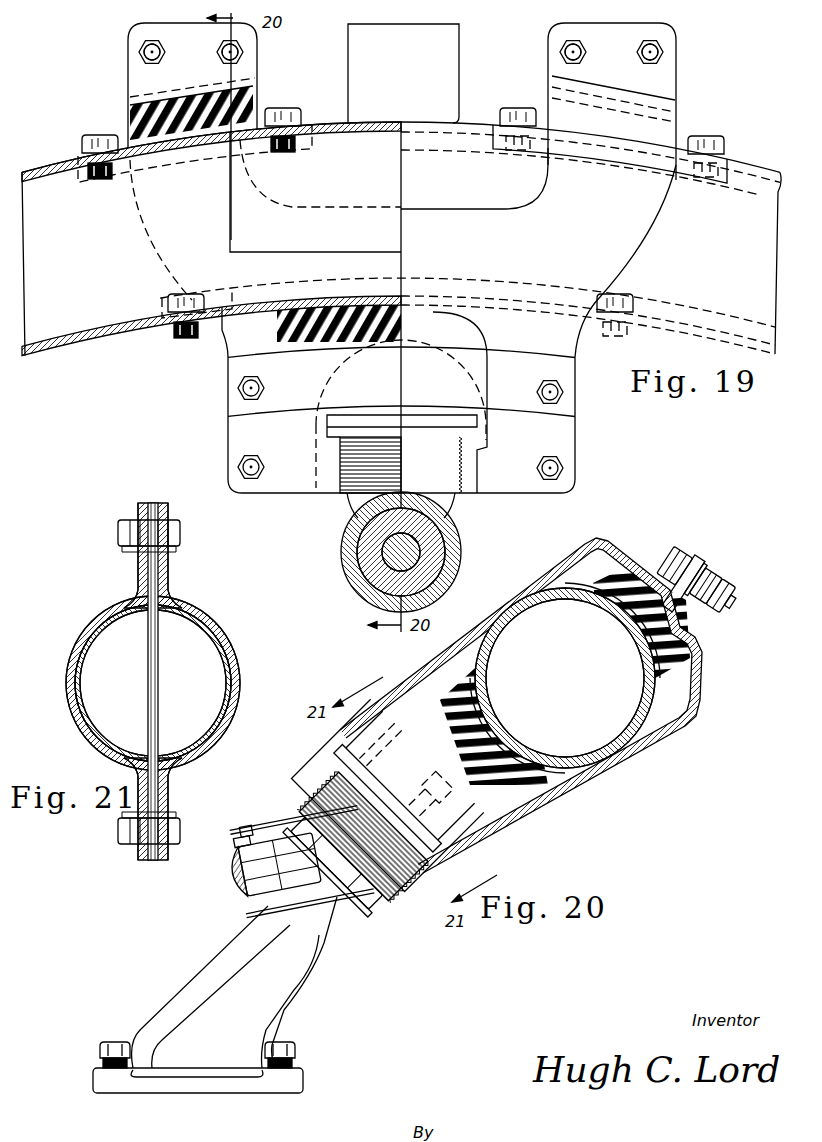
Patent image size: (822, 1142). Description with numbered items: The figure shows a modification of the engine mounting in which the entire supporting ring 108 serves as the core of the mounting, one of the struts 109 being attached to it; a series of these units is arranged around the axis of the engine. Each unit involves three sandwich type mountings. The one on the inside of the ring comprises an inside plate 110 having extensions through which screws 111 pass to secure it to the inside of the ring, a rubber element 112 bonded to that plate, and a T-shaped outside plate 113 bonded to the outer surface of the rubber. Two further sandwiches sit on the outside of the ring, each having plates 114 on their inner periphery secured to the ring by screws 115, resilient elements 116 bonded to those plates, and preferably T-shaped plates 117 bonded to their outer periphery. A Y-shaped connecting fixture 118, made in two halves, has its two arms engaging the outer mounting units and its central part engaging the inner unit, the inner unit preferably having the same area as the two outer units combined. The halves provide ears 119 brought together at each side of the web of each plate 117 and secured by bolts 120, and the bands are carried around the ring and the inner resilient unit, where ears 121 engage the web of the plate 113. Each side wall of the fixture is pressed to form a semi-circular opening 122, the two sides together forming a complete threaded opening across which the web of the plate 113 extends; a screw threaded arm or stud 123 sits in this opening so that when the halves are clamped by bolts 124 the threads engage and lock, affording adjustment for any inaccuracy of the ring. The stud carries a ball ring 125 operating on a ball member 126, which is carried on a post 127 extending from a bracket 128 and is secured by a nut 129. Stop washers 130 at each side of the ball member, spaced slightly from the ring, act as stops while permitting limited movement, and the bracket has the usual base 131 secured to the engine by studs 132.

In FIG. 19, the supporting ring 108 is at (107, 333).
In FIG. 20, the supporting ring 108 is at (640, 727).
In FIG. 19, the strut 109 is at (461, 63).
In FIG. 19, the inside plate 110 is at (247, 313).
In FIG. 20, the inside plate 110 is at (457, 690).
In FIG. 19, the screws 111 is at (172, 332).
In FIG. 19, the rubber element 112 is at (277, 327).
In FIG. 20, the rubber element 112 is at (540, 768).
In FIG. 19, the outside plate 113 is at (238, 417).
In FIG. 21, the outside plate 113 is at (157, 633).
In FIG. 20, the outside plate 113 is at (447, 720).
In FIG. 19, the plates 114 is at (78, 154).
In FIG. 20, the plates 114 is at (648, 656).
In FIG. 19, the screws 115 is at (88, 133).
In FIG. 19, the resilient elements 116 is at (250, 100).
In FIG. 20, the resilient elements 116 is at (694, 672).
In FIG. 19, the plates 117 is at (138, 93).
In FIG. 20, the plates 117 is at (648, 578).
In FIG. 19, the connecting fixture 118 is at (657, 233).
In FIG. 20, the connecting fixture 118 is at (640, 757).
In FIG. 19, the ears 119 is at (258, 47).
In FIG. 20, the ears 119 is at (725, 603).
In FIG. 19, the bolts 120 is at (147, 50).
In FIG. 20, the bolts 120 is at (686, 553).
In FIG. 19, the ears 121 is at (566, 432).
In FIG. 20, the ears 121 is at (320, 813).
In FIG. 19, the semi-circular opening 122 is at (317, 428).
In FIG. 21, the semi-circular opening 122 is at (233, 650).
In FIG. 20, the semi-circular opening 122 is at (433, 710).
In FIG. 19, the screw threaded arm or stud 123 is at (349, 486).
In FIG. 21, the screw threaded arm or stud 123 is at (230, 675).
In FIG. 20, the screw threaded arm or stud 123 is at (378, 908).
In FIG. 19, the bolts 124 is at (565, 395).
In FIG. 21, the bolts 124 is at (117, 527).
In FIG. 20, the bolts 124 is at (361, 882).
In FIG. 20, the ball ring 125 is at (238, 887).
In FIG. 20, the ball member 126 is at (250, 890).
In FIG. 20, the post 127 is at (242, 843).
In FIG. 20, the bracket 128 is at (308, 992).
In FIG. 20, the nut 129 is at (246, 832).
In FIG. 20, the stop washers 130 is at (240, 870).
In FIG. 20, the base 131 is at (207, 1093).
In FIG. 20, the studs 132 is at (108, 1047).